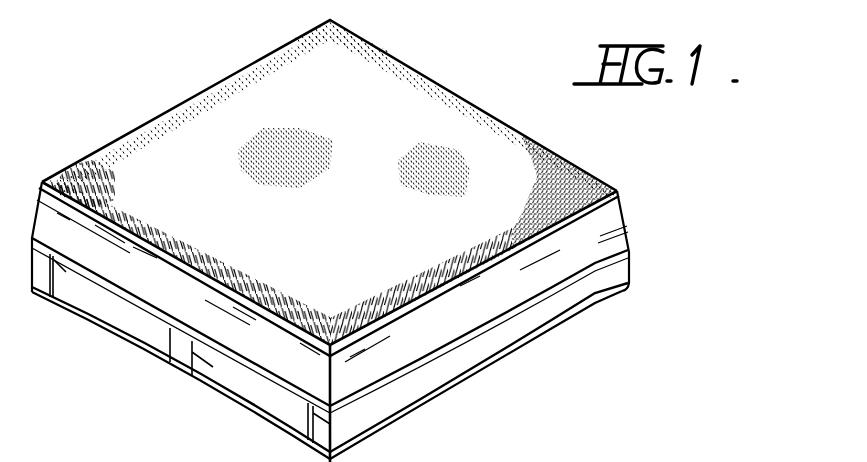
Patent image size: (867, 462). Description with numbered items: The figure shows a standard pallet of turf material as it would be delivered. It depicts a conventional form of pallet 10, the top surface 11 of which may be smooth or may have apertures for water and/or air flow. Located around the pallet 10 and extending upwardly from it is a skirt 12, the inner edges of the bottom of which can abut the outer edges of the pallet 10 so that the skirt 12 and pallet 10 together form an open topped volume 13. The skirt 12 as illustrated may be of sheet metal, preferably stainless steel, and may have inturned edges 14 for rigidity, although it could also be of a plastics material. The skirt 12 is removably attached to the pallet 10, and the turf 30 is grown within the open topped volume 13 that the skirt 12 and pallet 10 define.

The pallet 10 is at (522, 364).
The top surface 11 is at (240, 350).
The skirt 12 is at (613, 220).
The open topped volume 13 is at (185, 138).
The inturned edges 14 is at (603, 302).
The turf 30 is at (425, 90).